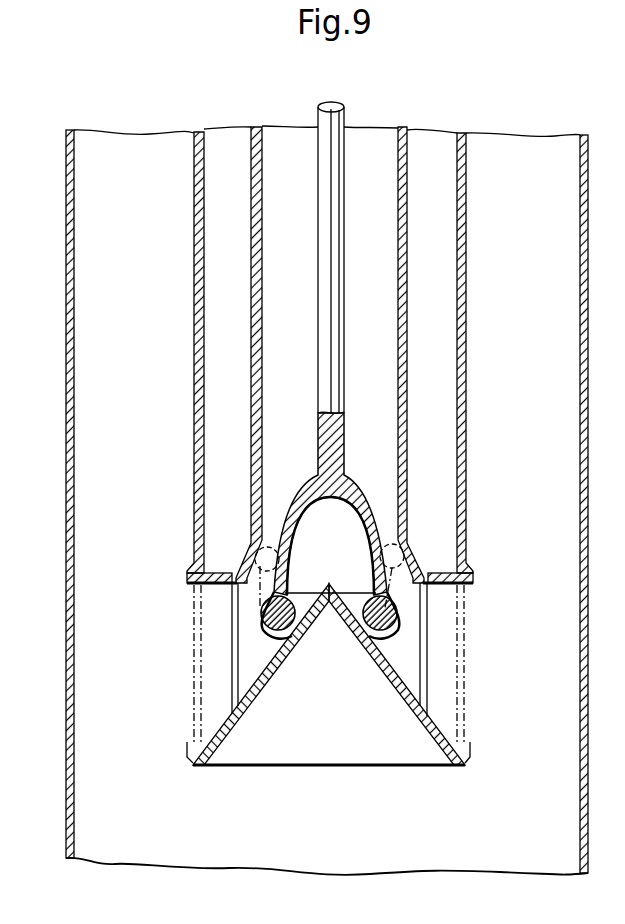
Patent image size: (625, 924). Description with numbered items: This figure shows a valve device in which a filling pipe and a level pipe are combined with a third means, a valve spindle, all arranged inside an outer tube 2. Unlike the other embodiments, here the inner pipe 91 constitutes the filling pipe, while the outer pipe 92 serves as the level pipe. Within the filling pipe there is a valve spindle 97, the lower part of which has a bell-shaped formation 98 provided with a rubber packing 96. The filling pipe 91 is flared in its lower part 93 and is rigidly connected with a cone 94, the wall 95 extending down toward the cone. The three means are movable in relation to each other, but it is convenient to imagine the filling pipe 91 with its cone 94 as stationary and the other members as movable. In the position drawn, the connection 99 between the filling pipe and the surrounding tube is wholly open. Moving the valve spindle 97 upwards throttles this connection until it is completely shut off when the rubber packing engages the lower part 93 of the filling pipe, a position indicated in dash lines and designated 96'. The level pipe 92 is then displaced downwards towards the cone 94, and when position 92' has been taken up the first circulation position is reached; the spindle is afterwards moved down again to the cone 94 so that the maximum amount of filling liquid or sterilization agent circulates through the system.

The housing 2 is at (66, 534).
The inner pipe 91 is at (262, 264).
The outer pipe 92 is at (317, 352).
The position of the level pipe 92' is at (357, 663).
The lower part of the filling pipe 93 is at (232, 575).
The cone 94 is at (215, 728).
The cylindrical wall 95 is at (233, 652).
The rubber packing 96 is at (273, 617).
The position of the rubber packing 96' is at (358, 560).
The valve spindle 97 is at (345, 109).
The bell-shaped formation 98 is at (306, 506).
The connection 99 is at (258, 583).